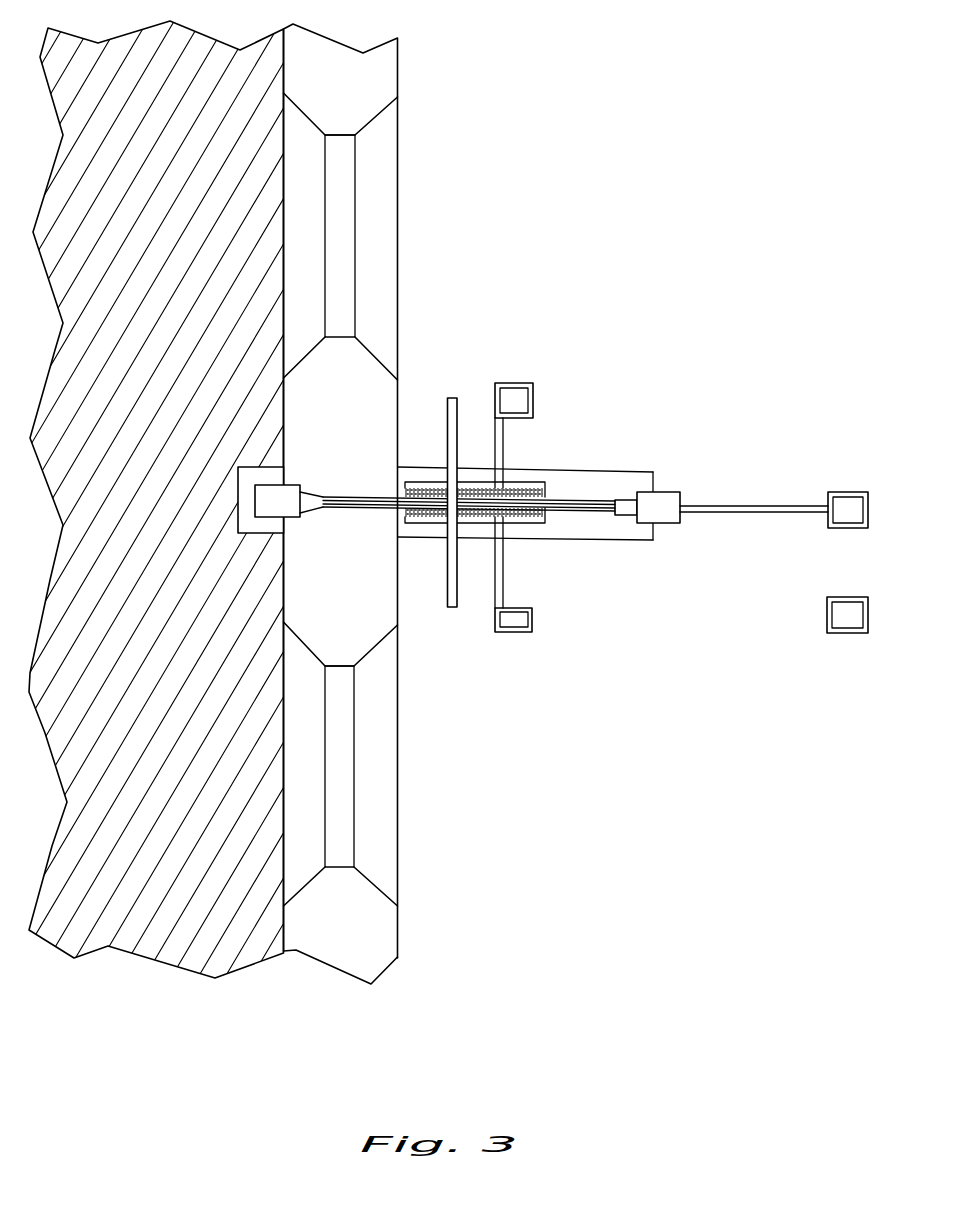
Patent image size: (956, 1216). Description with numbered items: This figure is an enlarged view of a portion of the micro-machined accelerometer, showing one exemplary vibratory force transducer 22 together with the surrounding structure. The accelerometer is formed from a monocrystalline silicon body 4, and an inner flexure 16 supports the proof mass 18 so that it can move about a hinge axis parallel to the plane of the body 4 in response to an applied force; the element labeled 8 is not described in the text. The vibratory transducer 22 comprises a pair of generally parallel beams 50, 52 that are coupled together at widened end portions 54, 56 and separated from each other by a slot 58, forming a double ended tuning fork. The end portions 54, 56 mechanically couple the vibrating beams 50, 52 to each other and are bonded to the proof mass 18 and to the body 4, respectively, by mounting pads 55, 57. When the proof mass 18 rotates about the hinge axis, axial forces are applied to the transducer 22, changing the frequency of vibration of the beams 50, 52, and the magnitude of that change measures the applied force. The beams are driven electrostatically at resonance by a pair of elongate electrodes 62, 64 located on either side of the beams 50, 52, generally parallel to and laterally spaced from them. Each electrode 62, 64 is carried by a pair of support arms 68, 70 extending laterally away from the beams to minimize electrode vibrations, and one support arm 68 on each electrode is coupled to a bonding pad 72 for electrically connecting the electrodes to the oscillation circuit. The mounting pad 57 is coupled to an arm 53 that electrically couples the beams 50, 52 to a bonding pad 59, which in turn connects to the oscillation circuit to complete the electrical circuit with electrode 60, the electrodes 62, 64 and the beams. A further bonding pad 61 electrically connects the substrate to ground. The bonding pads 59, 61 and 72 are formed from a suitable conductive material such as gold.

The monocrystalline silicon body 4 is at (398, 252).
The casing bottom 8 is at (392, 955).
The inner flexure 16 is at (399, 796).
The proof mass 18 is at (156, 999).
The vibratory force transducer 22 is at (582, 352).
The beam 50 is at (582, 500).
The beam 52 is at (575, 513).
The arm 53 is at (736, 513).
The end portion 54 is at (628, 497).
The mounting pad 55 is at (662, 497).
The end portion 56 is at (315, 496).
The mounting pad 57 is at (288, 490).
The slot 58 is at (347, 511).
The bonding pad 59 is at (846, 502).
The electrode 60 is at (629, 534).
The bonding pad 61 is at (839, 621).
The electrode 62 is at (521, 484).
The electrode 64 is at (427, 520).
The support arm 68 is at (494, 604).
The support arm 70 is at (450, 608).
The bonding pad 72 is at (507, 393).